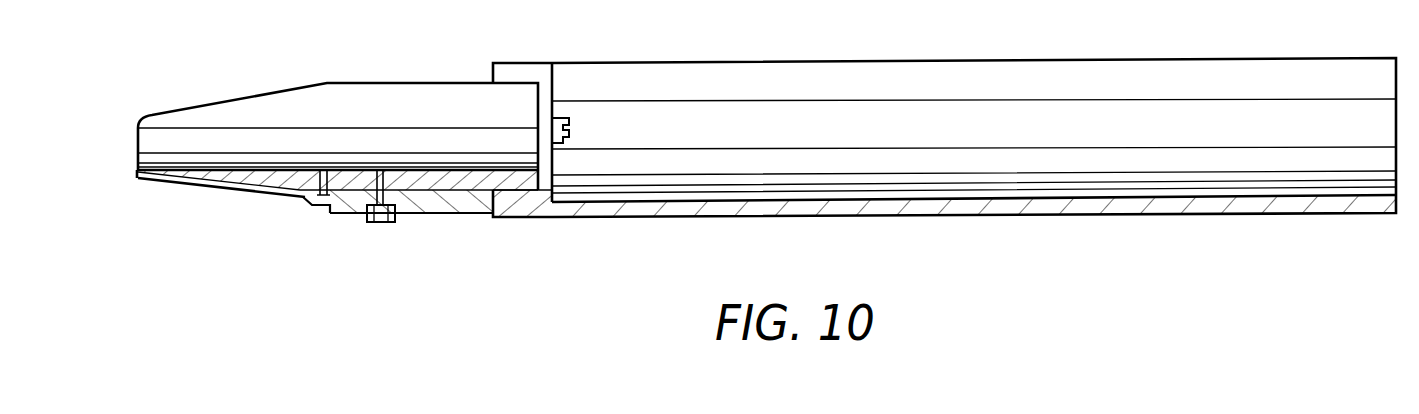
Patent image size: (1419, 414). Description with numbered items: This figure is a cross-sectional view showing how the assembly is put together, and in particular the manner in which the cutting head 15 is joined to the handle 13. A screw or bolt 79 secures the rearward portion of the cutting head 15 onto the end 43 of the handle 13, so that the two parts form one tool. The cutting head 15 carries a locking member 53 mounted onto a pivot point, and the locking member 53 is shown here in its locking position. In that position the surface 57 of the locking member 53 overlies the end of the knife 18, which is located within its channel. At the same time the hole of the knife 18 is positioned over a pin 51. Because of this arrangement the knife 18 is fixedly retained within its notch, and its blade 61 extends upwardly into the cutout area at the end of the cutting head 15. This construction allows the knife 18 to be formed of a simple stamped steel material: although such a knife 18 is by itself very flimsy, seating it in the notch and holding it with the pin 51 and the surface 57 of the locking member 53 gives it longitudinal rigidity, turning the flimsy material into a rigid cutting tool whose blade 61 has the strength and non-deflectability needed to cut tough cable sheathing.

The handle 13 is at (830, 61).
The cutting head 15 is at (347, 83).
The knife 18 is at (230, 190).
The end of the handle 43 is at (492, 72).
The pin 51 is at (333, 170).
The locking member 53 is at (457, 215).
The surface of the locking member 57 is at (307, 200).
The blade 61 is at (133, 163).
The screw or bolt 79 is at (572, 138).